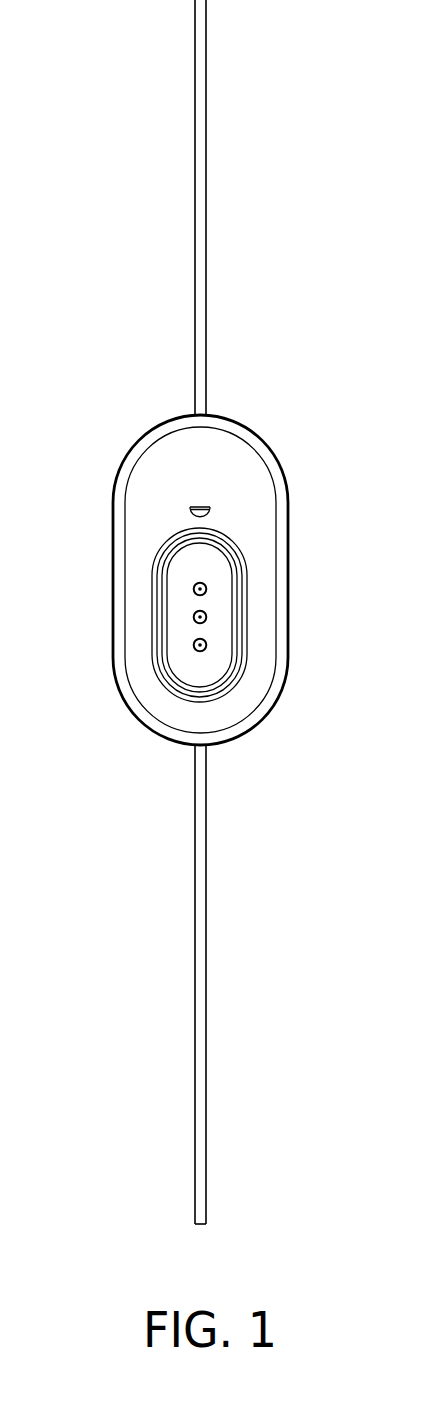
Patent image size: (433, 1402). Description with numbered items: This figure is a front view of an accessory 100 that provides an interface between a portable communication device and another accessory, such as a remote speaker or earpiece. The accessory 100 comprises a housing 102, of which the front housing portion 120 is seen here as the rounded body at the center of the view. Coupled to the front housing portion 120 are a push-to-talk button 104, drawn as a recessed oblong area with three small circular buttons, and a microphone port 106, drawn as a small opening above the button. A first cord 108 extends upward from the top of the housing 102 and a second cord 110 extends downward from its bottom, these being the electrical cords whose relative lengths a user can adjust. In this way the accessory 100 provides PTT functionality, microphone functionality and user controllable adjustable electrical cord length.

The accessory 100 is at (88, 97).
The housing 102 is at (194, 561).
The push-to-talk button 104 is at (202, 633).
The microphone port 106 is at (200, 516).
The first cord 108 is at (206, 201).
The second cord 110 is at (206, 1022).
The front housing portion 120 is at (113, 578).